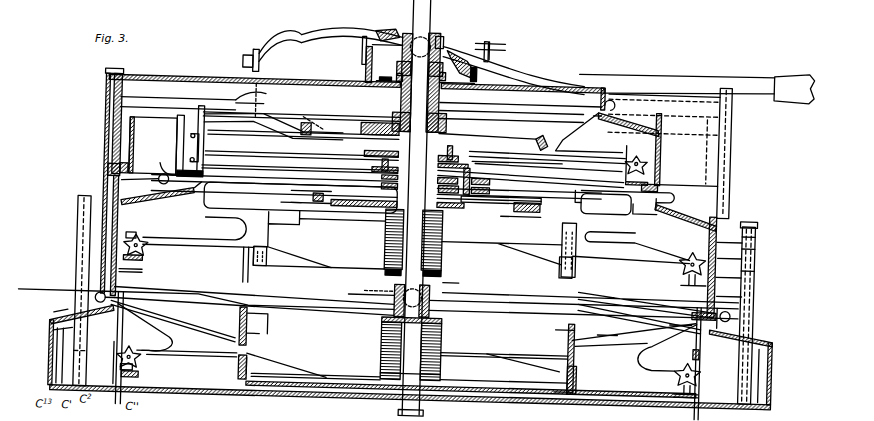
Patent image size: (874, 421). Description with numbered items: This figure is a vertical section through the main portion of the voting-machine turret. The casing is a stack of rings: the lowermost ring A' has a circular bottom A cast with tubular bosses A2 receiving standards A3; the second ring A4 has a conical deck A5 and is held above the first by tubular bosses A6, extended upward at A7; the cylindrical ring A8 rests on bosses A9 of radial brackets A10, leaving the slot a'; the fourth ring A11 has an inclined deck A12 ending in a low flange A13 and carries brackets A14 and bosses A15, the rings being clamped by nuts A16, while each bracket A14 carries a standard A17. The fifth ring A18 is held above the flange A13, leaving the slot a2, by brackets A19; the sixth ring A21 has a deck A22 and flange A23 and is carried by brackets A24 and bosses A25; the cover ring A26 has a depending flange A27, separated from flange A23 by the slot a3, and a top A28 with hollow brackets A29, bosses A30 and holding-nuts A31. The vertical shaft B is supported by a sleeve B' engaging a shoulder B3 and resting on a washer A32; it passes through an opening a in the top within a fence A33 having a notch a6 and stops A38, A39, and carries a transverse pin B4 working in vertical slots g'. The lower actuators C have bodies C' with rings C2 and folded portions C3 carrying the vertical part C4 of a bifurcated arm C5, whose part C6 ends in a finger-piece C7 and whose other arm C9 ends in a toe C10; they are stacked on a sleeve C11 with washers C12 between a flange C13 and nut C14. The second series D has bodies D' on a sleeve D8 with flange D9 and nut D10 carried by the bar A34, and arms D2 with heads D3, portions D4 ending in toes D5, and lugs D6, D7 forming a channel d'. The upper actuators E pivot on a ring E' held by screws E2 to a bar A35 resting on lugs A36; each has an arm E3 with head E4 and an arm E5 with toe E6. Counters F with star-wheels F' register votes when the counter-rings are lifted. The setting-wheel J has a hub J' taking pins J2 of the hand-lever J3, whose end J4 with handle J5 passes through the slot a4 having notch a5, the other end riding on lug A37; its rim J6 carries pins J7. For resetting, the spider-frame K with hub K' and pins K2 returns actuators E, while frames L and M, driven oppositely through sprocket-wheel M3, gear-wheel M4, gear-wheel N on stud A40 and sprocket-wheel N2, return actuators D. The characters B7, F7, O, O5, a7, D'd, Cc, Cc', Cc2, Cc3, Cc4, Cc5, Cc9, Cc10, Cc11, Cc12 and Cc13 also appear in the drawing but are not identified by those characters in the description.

The circular bottom A is at (409, 403).
The lowermost ring A' is at (44, 353).
The vertical tubular bosses A2 is at (118, 360).
The rod or standard A3 is at (77, 262).
The second ring A4 is at (56, 326).
The conical deck A5 is at (58, 321).
The tubular bosses A6 is at (745, 360).
The upward boss extension A7 is at (755, 322).
The third ring A8 is at (756, 300).
The tubular bosses A9 is at (756, 266).
The radial brackets A10 is at (729, 263).
The fourth ring A11 is at (722, 222).
The inclined deck A12 is at (686, 233).
The low cylindrical flange A13 is at (652, 232).
The radial brackets A14 is at (756, 224).
The downwardly-extending tubular bosses A15 is at (756, 246).
The nuts A16 is at (748, 214).
The vertical standard A17 is at (108, 176).
The fifth ring A18 is at (160, 172).
The brackets A19 is at (160, 188).
The sixth ring A21 is at (174, 134).
The inclined deck A22 is at (640, 115).
The cylindrical flange A23 is at (603, 132).
The brackets A24 is at (688, 153).
The bosses A25 is at (101, 116).
The cover ring A26 is at (600, 72).
The depending flange A27 is at (580, 103).
The circular top A28 is at (521, 108).
The hollow brackets A29 is at (182, 93).
The bosses A30 is at (108, 92).
The holding-nuts A31 is at (104, 79).
The washer A32 is at (250, 104).
The cylindrical fence A33 is at (362, 72).
The stationary bar A34 is at (454, 290).
The diametrically-extending bar A35 is at (575, 176).
The inwardly-projecting lugs A36 is at (204, 170).
The long segmental lug A37 is at (698, 312).
The stop A38 is at (480, 38).
The stop A39 is at (358, 52).
The stud A40 is at (517, 163).
The vertical shaft B is at (416, 207).
The sleeve B' is at (420, 414).
The annular shoulder B3 is at (242, 338).
The transverse pin B4 is at (395, 32).
The arm B7 is at (242, 352).
The lower actuators C is at (407, 358).
The body portion C' is at (409, 359).
The ring C2 is at (250, 366).
The folded portion C3 is at (300, 352).
The vertical part C4 is at (405, 344).
The bifurcated arm C5 is at (220, 340).
The arm part C6 is at (664, 318).
The finger-piece C7 is at (110, 312).
The other arm C9 is at (654, 372).
The horizontal toe C10 is at (614, 366).
The sleeve C11 is at (152, 352).
The washers C12 is at (440, 368).
The flange C13 is at (446, 386).
The nut C14 is at (440, 324).
The upper hub Cc is at (447, 83).
The collar Cc' is at (425, 73).
The pipe Cc2 is at (455, 54).
The cap Cc3 is at (440, 40).
The pipe Cc4 is at (306, 118).
The pipe coupling Cc5 is at (256, 58).
The bar Cc9 is at (142, 280).
The plate Cc10 is at (140, 378).
The plate Cc11 is at (142, 266).
The star wheel Cc12 is at (620, 176).
The bar Cc13 is at (270, 135).
The second series of actuators D is at (319, 243).
The bodies D' is at (414, 255).
The arms D2 is at (408, 223).
The disk or head D3 is at (168, 204).
The arm portion D4 is at (204, 250).
The toe D5 is at (190, 242).
The lug D6 is at (520, 217).
The lug D7 is at (426, 211).
The sleeve D8 is at (442, 230).
The flange D9 is at (444, 276).
The nut D10 is at (436, 206).
The frame D'd is at (606, 203).
The upper actuators E is at (415, 159).
The ring E' is at (464, 160).
The screws E2 is at (457, 150).
The arm E3 is at (565, 115).
The head or disk E4 is at (612, 100).
The other arm E5 is at (549, 157).
The toe E6 is at (622, 152).
The counters F is at (166, 257).
The star-wheel F' is at (405, 314).
The block F7 is at (135, 226).
The wheel J is at (426, 299).
The hub J' is at (380, 285).
The pins J2 is at (371, 287).
The hand-lever J3 is at (506, 294).
The lever end J4 is at (222, 300).
The handle J5 is at (50, 300).
The rim J6 is at (620, 326).
The pins J7 is at (252, 258).
The spider-frame K is at (260, 118).
The hub K' is at (375, 163).
The downwardly-projecting pins K2 is at (298, 144).
The upper spider-frame L is at (344, 180).
The lower spider-frame M is at (360, 206).
The sprocket-wheel M3 is at (380, 175).
The gear-wheel M4 is at (380, 187).
The gear-wheel N is at (490, 190).
The sprocket-wheel N2 is at (490, 180).
The block O is at (381, 78).
The block O5 is at (480, 70).
The opening a is at (402, 82).
The circumferential slot a' is at (301, 193).
The circumferential slot a2 is at (197, 195).
The circumferential slot a3 is at (727, 309).
The slot a4 is at (117, 292).
The notch a5 is at (705, 352).
The notch a6 is at (486, 56).
The pin a7 is at (591, 125).
The channel d' is at (567, 212).
The vertical slots g' is at (429, 31).